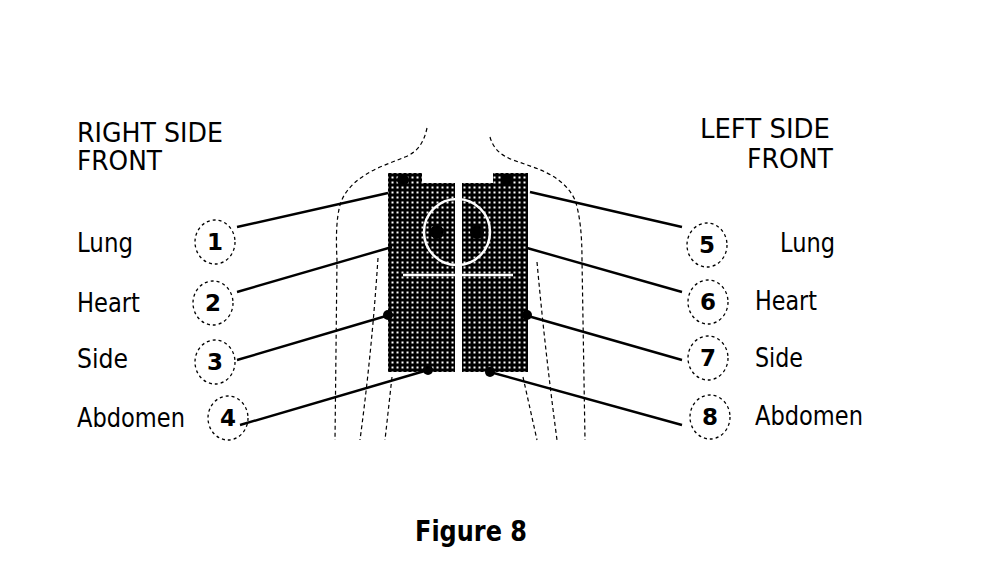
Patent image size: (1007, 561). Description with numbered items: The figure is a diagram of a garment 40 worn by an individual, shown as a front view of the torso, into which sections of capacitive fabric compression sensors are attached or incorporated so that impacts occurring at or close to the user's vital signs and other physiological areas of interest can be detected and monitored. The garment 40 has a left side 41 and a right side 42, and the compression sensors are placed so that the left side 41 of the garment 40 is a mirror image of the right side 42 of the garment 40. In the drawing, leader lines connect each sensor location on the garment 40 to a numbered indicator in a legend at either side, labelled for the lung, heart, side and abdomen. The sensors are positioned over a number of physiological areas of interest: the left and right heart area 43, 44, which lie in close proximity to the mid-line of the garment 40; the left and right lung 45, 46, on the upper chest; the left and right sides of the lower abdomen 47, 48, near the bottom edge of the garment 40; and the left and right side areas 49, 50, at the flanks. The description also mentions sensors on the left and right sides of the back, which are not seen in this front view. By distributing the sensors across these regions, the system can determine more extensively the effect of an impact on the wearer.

The garment 40 is at (474, 167).
The left side 41 is at (500, 180).
The right side 42 is at (415, 188).
The left heart area 43 is at (604, 270).
The right heart area 44 is at (312, 269).
The left lung 45 is at (606, 209).
The right lung 46 is at (310, 210).
The left side of the lower abdomen 47 is at (586, 398).
The right side of the lower abdomen 48 is at (334, 397).
The left side area 49 is at (605, 338).
The right side area 50 is at (309, 338).